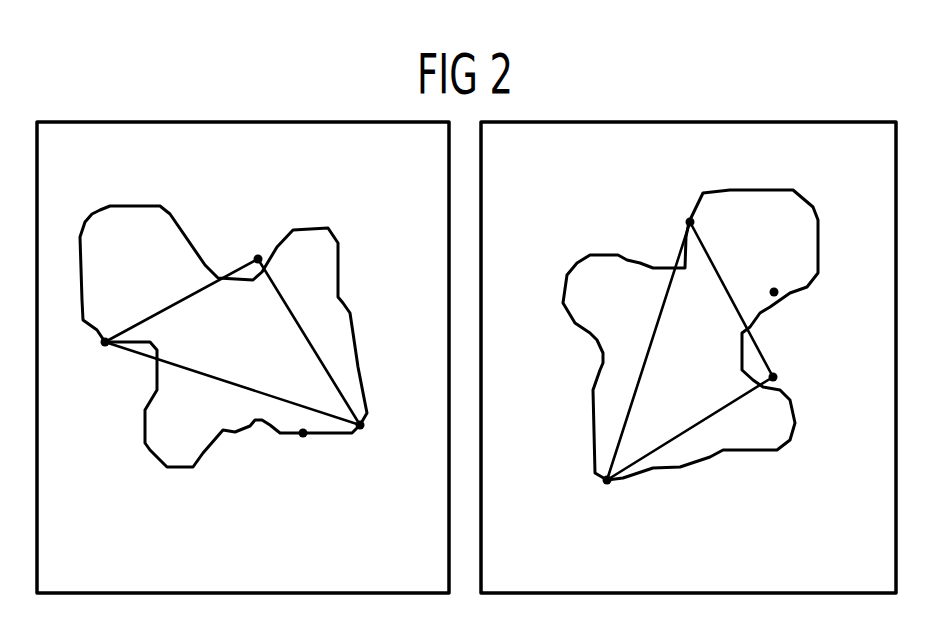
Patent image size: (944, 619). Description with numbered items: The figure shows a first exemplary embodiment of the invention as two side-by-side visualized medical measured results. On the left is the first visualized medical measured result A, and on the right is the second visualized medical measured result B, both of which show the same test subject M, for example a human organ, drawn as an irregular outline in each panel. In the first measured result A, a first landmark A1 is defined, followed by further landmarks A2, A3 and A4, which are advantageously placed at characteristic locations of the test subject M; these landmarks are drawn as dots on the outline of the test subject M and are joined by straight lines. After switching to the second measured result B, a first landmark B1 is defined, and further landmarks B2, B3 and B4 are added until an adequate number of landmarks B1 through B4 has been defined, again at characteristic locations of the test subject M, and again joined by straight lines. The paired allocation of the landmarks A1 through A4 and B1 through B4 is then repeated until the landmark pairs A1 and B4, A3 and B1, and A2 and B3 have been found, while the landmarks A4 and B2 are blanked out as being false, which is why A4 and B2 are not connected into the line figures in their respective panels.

The first visualized medical measured result A is at (243, 357).
The second visualized medical measured result B is at (688, 357).
The test subject M is at (138, 205).
The first landmark A1 is at (105, 347).
The landmark A2 is at (362, 430).
The landmark A3 is at (257, 256).
The landmark A4 is at (303, 438).
The first landmark B1 is at (778, 379).
The landmark B2 is at (779, 296).
The landmark B3 is at (607, 486).
The landmark B4 is at (695, 222).